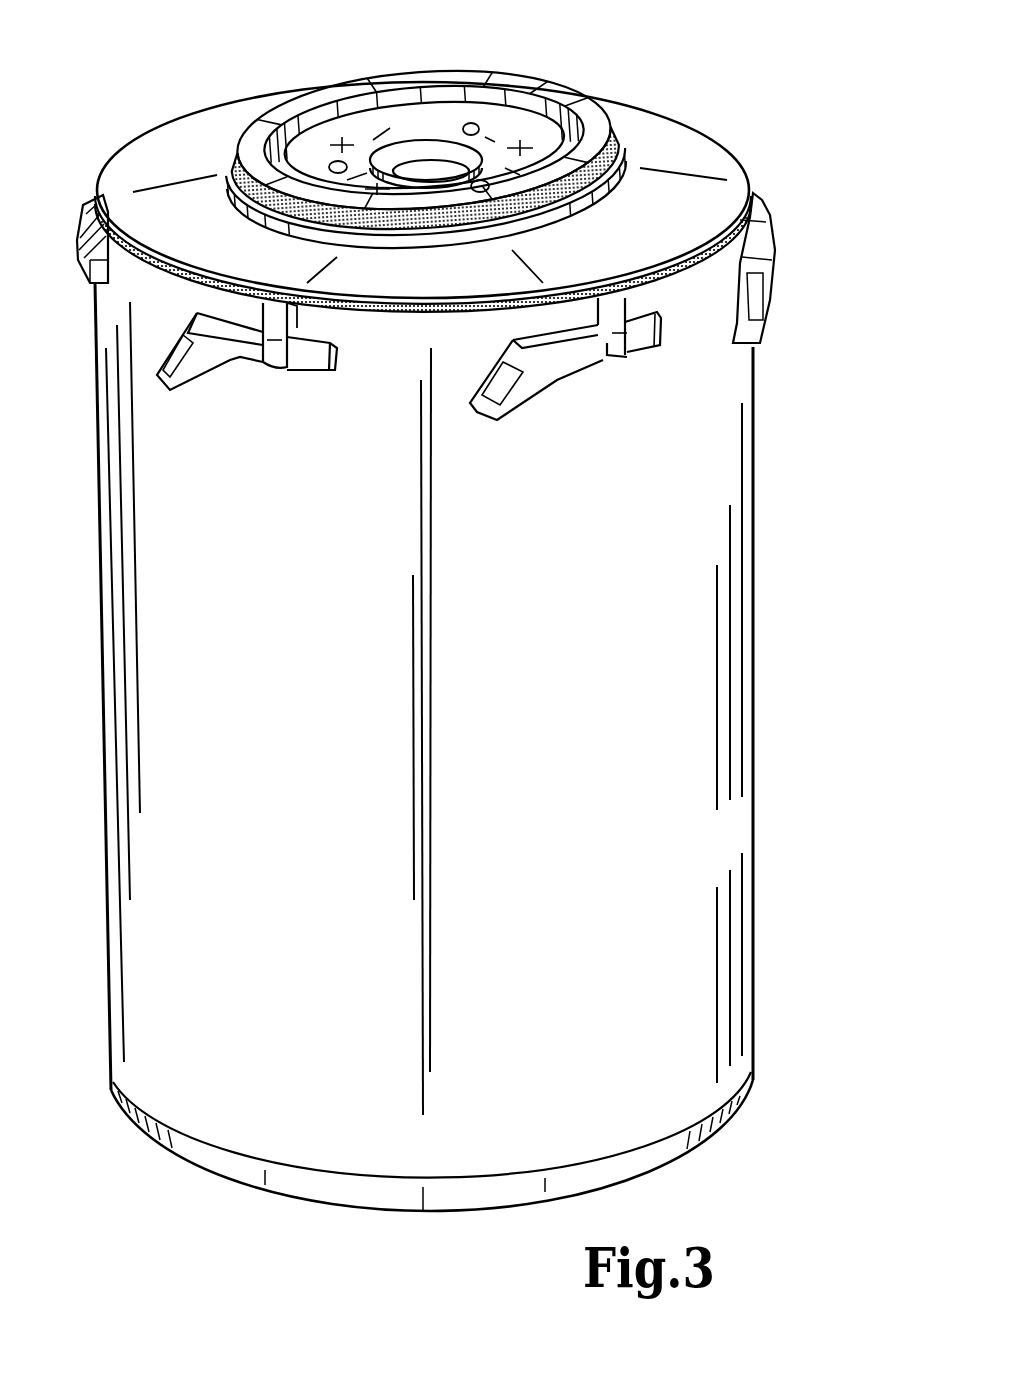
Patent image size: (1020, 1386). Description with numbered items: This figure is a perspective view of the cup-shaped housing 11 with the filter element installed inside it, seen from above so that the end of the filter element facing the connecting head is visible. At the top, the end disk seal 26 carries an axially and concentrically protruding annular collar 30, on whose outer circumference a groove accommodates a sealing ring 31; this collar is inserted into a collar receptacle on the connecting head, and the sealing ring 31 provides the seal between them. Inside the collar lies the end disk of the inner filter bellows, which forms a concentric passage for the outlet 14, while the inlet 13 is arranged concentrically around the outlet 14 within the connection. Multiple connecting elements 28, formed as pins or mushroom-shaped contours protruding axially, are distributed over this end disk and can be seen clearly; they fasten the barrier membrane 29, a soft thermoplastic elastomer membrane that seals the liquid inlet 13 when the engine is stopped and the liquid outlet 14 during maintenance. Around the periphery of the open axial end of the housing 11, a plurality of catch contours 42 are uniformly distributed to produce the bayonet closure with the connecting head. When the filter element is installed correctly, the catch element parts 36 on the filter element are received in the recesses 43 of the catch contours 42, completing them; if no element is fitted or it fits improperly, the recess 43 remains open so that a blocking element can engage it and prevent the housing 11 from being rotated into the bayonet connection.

The cup-shaped housing 11 is at (722, 840).
The inlet 13 is at (282, 152).
The outlet 14 is at (434, 145).
The end disk seal 26 is at (160, 152).
The connecting element 28 is at (478, 128).
The barrier membrane 29 is at (520, 128).
The annular collar 30 is at (417, 72).
The sealing ring 31 is at (625, 150).
The catch element parts 36 is at (270, 357).
The catch contours 42 is at (198, 362).
The recesses 43 is at (304, 384).